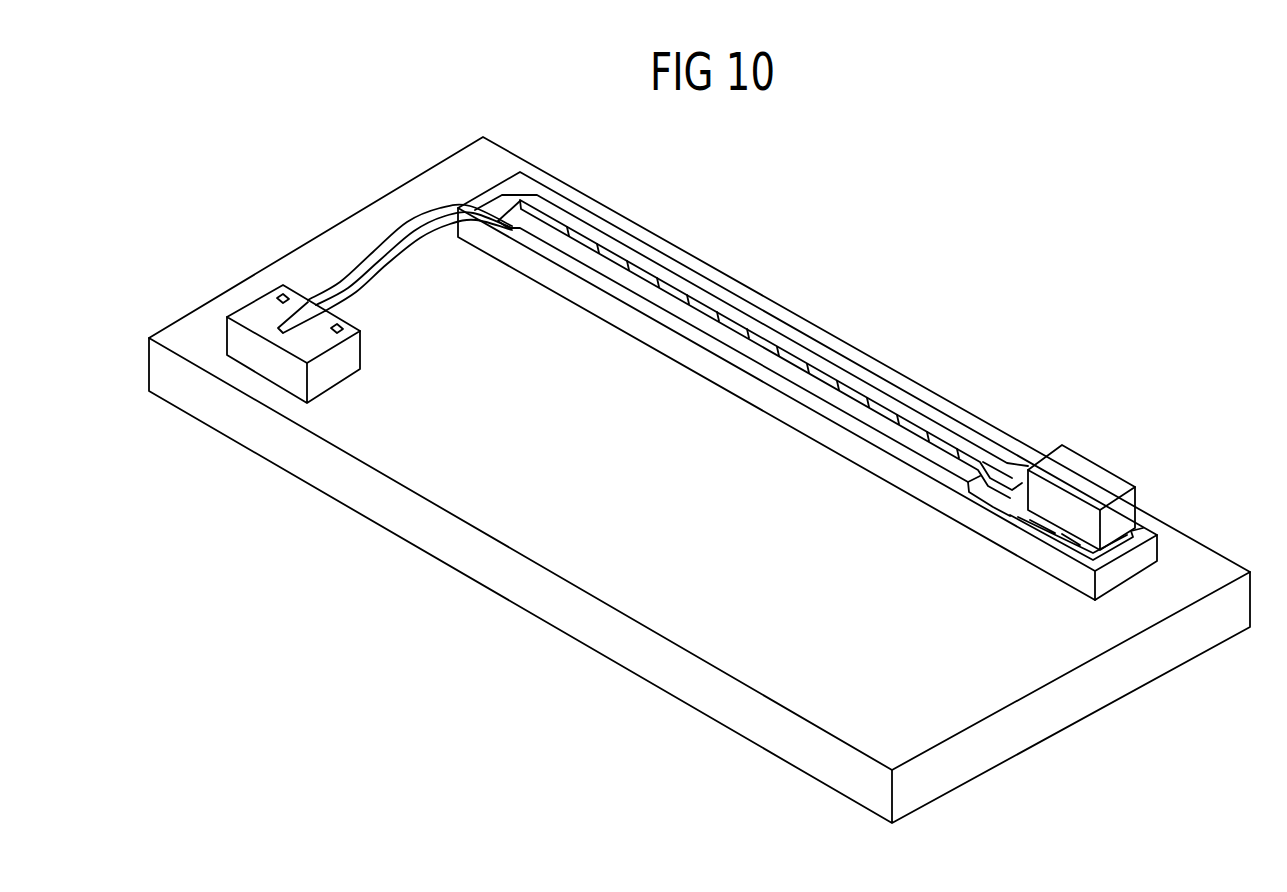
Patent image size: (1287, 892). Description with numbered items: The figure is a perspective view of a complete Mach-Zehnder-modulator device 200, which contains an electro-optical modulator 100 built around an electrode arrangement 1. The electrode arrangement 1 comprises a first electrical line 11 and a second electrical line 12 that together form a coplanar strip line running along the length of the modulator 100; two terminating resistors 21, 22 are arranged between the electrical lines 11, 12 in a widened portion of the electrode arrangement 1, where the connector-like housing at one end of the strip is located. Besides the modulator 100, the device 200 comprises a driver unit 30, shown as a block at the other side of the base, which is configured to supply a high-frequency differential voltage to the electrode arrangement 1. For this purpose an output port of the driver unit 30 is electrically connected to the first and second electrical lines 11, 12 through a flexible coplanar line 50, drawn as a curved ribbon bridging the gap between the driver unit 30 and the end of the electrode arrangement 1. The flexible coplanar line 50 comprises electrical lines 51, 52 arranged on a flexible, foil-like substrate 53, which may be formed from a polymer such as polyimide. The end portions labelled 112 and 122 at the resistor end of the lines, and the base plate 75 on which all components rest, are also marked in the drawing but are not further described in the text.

The electrode arrangement 1 is at (751, 371).
The first electrical line 11 is at (751, 346).
The end portion of upper substrate 112 is at (941, 445).
The second electrical line 12 is at (754, 374).
The end portion of lower substrate 122 is at (935, 455).
The terminating resistor 21 is at (1032, 462).
The terminating resistor 22 is at (1017, 495).
The driver unit 30 is at (283, 366).
The flexible coplanar line 50 is at (375, 216).
The electrical line 51 is at (394, 228).
The electrical line 52 is at (411, 236).
The flexible foil-like substrate 53 is at (353, 263).
The base plate 75 is at (1057, 718).
The electro-optical modulator 100 is at (807, 386).
The Mach-Zehnder-modulator device 200 is at (807, 368).